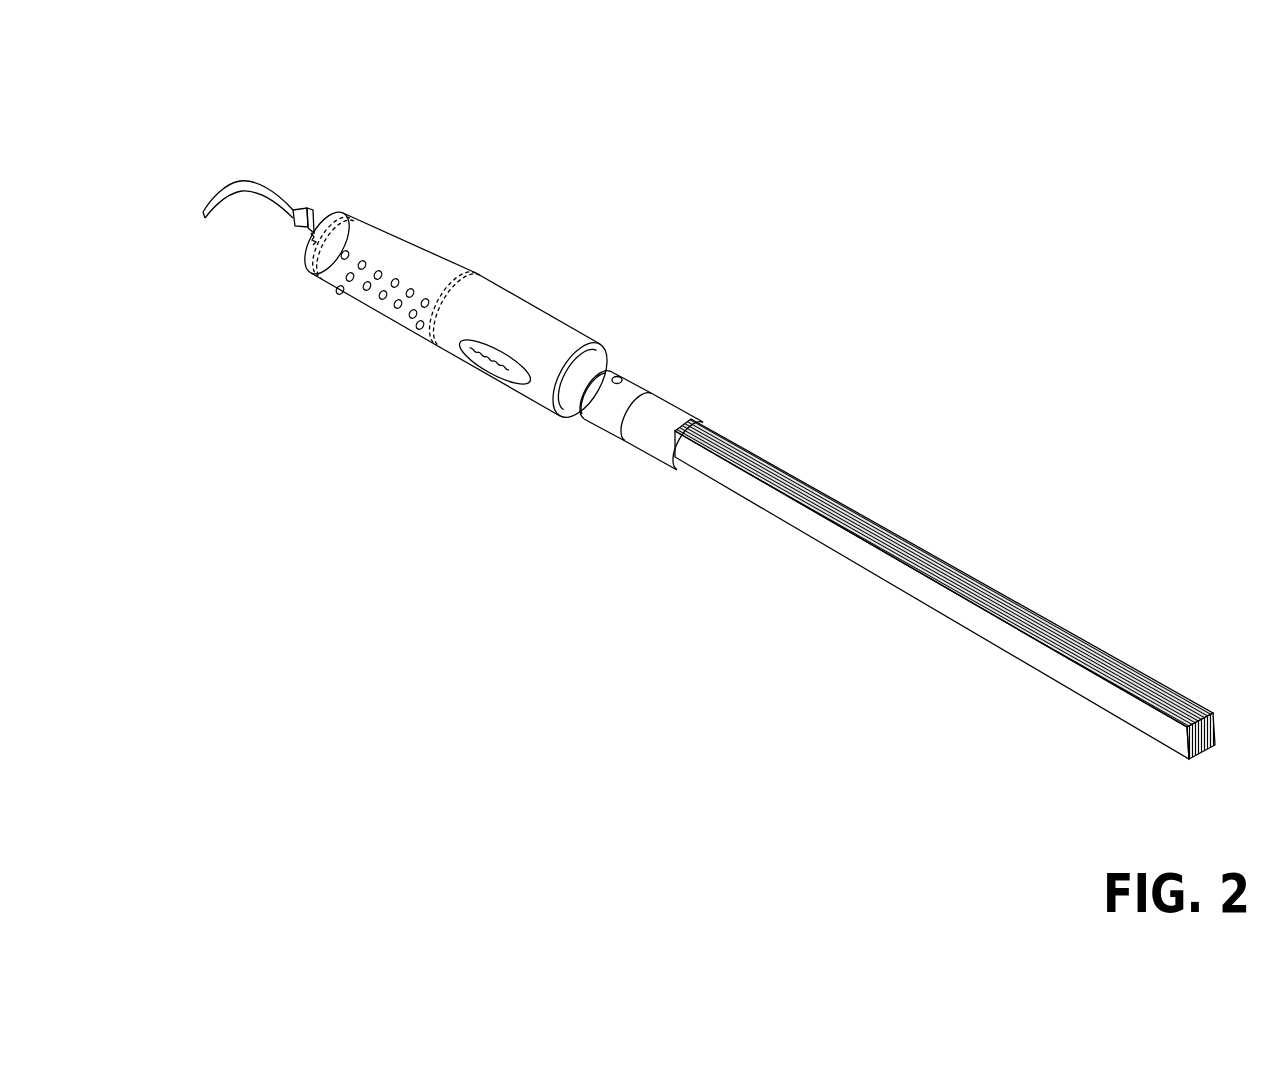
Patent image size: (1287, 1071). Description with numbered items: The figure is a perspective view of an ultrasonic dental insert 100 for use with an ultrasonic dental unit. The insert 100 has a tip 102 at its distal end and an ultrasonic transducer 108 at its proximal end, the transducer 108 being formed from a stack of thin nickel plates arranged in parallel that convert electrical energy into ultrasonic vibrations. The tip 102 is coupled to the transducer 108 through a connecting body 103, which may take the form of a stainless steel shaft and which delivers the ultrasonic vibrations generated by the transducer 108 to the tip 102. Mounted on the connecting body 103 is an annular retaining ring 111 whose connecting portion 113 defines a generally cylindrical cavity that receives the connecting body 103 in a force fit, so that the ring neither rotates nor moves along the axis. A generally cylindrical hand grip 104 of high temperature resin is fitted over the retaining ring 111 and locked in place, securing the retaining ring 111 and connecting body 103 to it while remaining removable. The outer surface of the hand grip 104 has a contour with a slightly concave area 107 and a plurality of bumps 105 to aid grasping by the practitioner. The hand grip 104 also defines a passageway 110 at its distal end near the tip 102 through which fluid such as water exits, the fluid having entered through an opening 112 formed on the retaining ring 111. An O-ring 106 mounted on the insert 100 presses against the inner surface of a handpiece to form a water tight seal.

The ultrasonic dental insert 100 is at (761, 317).
The tip 102 is at (248, 186).
The connecting body 103 is at (640, 387).
The hand grip 104 is at (482, 274).
The bumps 105 is at (380, 293).
The O-ring 106 is at (586, 400).
The slightly concave area 107 is at (427, 243).
The ultrasonic transducer 108 is at (878, 528).
The passageway 110 is at (305, 233).
The annular retaining ring 111 is at (568, 407).
The opening 112 is at (620, 371).
The connecting portion 113 is at (638, 384).